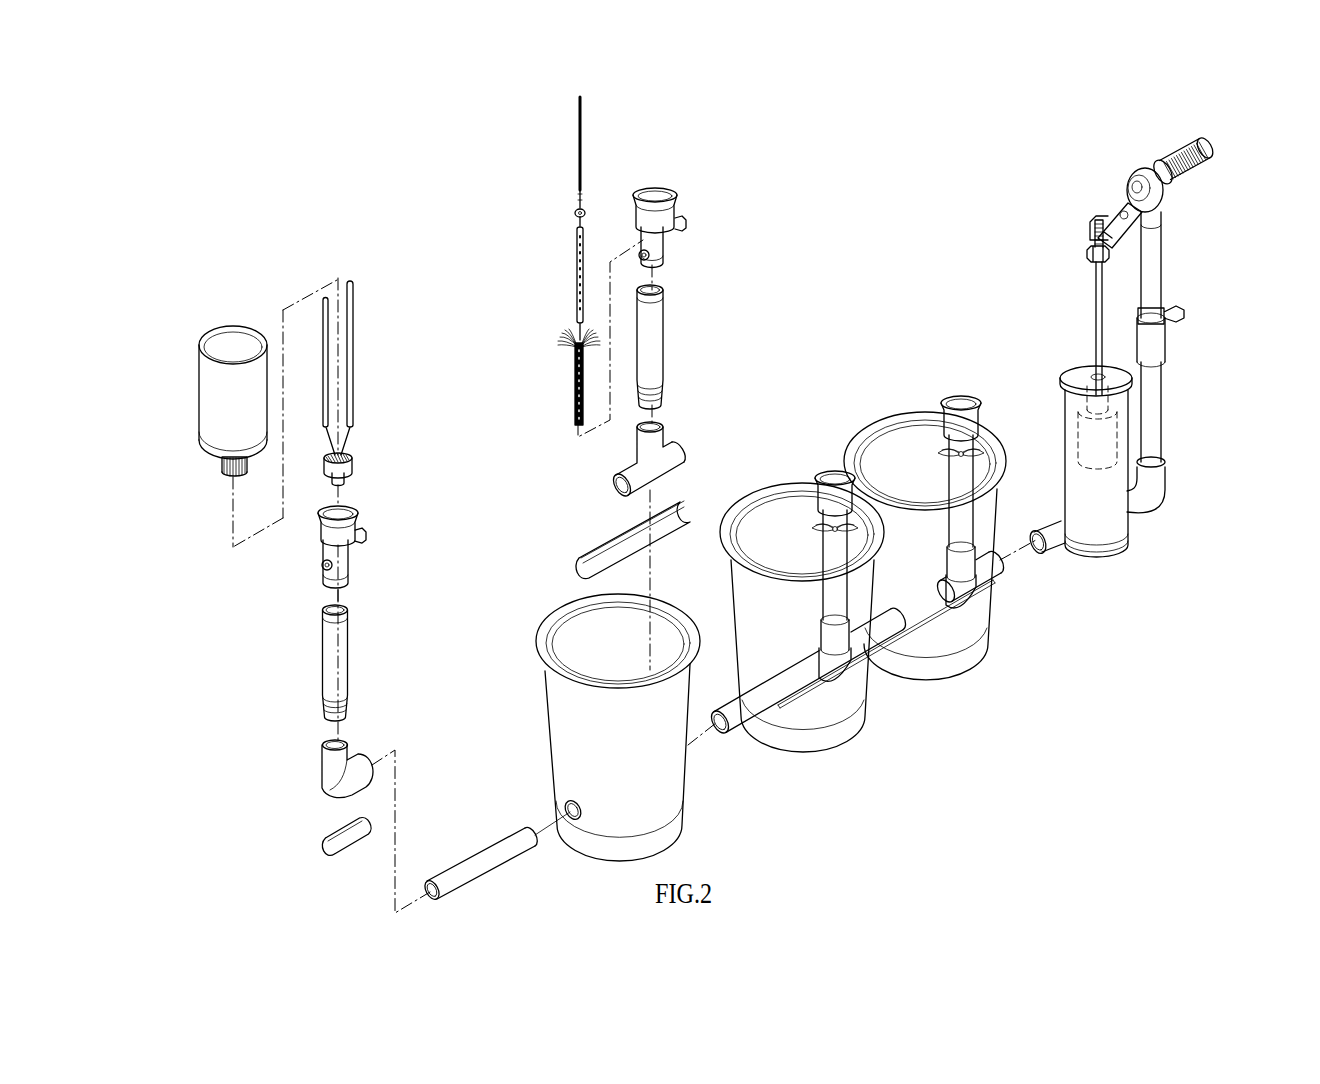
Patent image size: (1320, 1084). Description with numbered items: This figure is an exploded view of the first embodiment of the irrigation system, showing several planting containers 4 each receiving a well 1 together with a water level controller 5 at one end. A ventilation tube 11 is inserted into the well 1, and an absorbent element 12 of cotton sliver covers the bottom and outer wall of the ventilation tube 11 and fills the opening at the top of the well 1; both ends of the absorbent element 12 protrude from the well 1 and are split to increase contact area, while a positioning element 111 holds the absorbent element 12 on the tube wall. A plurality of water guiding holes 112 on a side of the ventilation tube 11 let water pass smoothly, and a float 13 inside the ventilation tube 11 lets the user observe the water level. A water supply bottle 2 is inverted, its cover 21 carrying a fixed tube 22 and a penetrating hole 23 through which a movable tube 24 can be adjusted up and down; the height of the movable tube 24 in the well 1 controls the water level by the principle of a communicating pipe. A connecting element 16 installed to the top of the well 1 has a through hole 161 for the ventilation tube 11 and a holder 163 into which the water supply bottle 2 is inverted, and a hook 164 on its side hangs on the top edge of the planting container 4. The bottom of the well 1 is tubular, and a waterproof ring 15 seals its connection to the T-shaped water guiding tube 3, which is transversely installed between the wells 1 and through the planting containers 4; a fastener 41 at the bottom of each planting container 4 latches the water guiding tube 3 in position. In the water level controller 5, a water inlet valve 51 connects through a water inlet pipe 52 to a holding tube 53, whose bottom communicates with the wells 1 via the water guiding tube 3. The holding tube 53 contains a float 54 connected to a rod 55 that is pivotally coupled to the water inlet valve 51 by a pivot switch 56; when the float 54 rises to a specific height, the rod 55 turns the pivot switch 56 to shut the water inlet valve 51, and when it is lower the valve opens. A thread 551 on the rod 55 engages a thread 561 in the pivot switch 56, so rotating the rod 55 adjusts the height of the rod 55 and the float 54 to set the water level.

The well 1 is at (329, 668).
The water supply bottle 2 is at (207, 385).
The water guiding tube 3 is at (512, 847).
The planting container 4 is at (672, 838).
The water level controller 5 is at (1097, 139).
The ventilation tube 11 is at (538, 278).
The absorbent element 12 is at (578, 372).
The float 13 is at (582, 117).
The waterproof ring 15 is at (325, 717).
The connecting element 16 is at (347, 555).
The cover 21 is at (352, 463).
The fixed tube 22 is at (325, 413).
The penetrating hole 23 is at (343, 490).
The movable tube 24 is at (353, 307).
The fastener 41 is at (595, 560).
The water inlet valve 51 is at (1165, 185).
The water inlet pipe 52 is at (1152, 385).
The holding tube 53 is at (1150, 461).
The float 54 is at (1107, 443).
The rod 55 is at (1095, 298).
The pivot switch 56 is at (1128, 238).
The positioning element 111 is at (577, 213).
The water guiding holes 112 is at (578, 272).
The through hole 161 is at (323, 565).
The holder 163 is at (352, 512).
The hook 164 is at (364, 538).
The thread 551 is at (1095, 222).
The thread 561 is at (1088, 253).